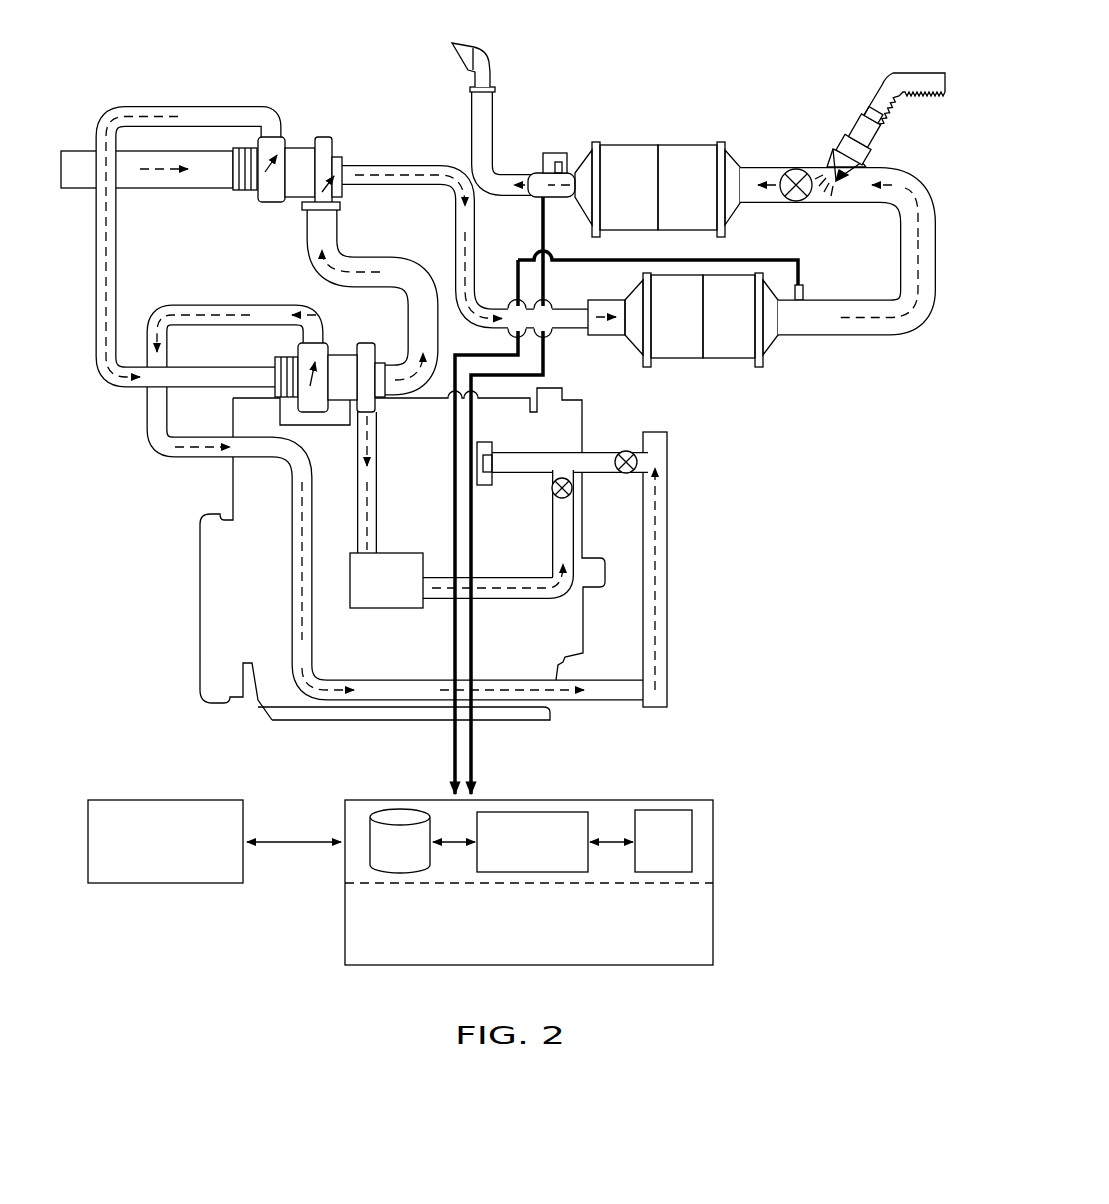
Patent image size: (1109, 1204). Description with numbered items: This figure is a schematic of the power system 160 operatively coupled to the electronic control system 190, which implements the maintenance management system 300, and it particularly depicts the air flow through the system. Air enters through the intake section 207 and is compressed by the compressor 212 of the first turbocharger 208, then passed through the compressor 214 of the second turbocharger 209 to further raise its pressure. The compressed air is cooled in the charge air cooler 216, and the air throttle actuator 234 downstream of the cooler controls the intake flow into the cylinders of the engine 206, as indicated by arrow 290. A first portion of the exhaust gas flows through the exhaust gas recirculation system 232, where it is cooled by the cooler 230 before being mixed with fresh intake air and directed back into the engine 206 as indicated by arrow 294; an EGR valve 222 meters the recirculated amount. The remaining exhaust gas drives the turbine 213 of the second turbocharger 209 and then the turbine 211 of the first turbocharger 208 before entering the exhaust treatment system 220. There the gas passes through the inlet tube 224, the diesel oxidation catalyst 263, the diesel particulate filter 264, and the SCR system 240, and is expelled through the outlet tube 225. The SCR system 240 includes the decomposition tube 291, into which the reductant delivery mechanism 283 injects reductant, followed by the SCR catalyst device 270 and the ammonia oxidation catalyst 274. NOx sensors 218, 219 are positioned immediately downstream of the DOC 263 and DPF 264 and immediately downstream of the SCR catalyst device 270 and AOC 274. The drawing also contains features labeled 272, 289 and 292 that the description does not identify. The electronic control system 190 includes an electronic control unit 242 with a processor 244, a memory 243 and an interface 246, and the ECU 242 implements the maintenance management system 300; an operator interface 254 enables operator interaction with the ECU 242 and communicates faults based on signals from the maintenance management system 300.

The power system 160 is at (609, 728).
The electronic control system 190 is at (326, 814).
The engine 206 is at (200, 545).
The intake section 207 is at (100, 106).
The first turbocharger 208 is at (302, 133).
The second turbocharger 209 is at (340, 338).
The turbine 211 is at (338, 150).
The compressor 212 is at (282, 133).
The turbine 213 is at (366, 338).
The compressor 214 is at (315, 413).
The charge air cooler 216 is at (668, 572).
The NOx sensor 218 is at (806, 290).
The NOx sensor 219 is at (570, 162).
The exhaust treatment system 220 is at (640, 60).
The EGR valve 222 is at (567, 499).
The inlet tube 224 is at (457, 232).
The outlet tube 225 is at (461, 80).
The cooler 230 is at (386, 510).
The exhaust gas recirculation system 232 is at (558, 611).
The air throttle actuator 234 is at (630, 474).
The SCR system 240 is at (726, 77).
The electronic control unit 242 is at (345, 922).
The memory 243 is at (422, 841).
The processor 244 is at (555, 842).
The interface 246 is at (663, 841).
The operator interface 254 is at (165, 841).
The diesel oxidation catalyst 263 is at (677, 360).
The diesel particulate filter 264 is at (735, 360).
The SCR catalyst device 270 is at (688, 142).
The mixer 272 is at (789, 170).
The ammonia oxidation catalyst 274 is at (628, 142).
The reductant delivery mechanism 283 is at (845, 140).
The air inlet 289 is at (86, 170).
The arrow 290 is at (499, 462).
The decomposition tube 291 is at (835, 205).
The exhaust conduit 292 is at (888, 337).
The arrow 294 is at (534, 589).
The maintenance management system 300 is at (529, 909).